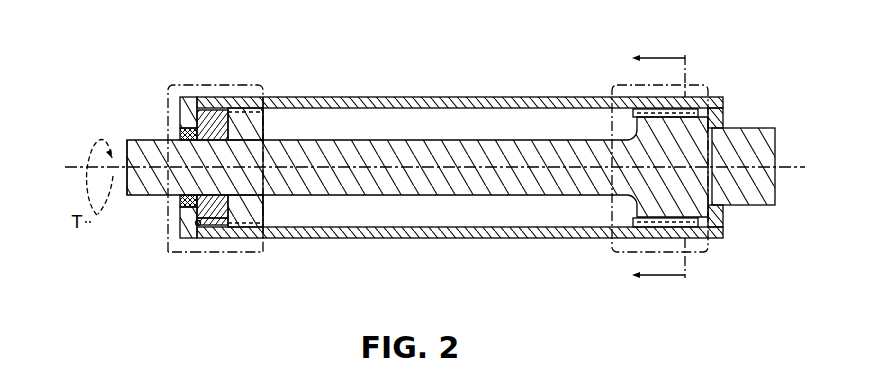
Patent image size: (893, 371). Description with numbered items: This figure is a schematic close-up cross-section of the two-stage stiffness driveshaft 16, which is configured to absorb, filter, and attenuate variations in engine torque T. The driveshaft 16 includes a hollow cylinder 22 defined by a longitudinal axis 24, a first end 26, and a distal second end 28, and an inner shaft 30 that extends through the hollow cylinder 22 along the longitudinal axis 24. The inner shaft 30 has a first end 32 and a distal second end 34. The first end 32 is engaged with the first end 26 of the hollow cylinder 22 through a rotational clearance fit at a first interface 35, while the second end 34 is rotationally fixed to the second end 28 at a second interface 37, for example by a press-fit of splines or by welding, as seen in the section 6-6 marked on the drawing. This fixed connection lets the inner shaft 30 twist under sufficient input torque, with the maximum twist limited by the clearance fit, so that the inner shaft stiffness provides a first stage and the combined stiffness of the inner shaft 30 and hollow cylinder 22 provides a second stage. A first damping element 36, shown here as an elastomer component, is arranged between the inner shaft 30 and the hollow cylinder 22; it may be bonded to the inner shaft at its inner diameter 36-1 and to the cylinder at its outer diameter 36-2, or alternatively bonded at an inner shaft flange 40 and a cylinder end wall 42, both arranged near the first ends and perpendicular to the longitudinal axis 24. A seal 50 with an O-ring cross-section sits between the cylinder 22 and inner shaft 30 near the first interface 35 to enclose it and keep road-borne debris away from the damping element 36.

The section 6- 6 is at (658, 167).
The driveshaft 16 is at (160, 105).
The hollow cylinder 22 is at (486, 97).
The longitudinal axis 24 is at (82, 166).
The first end 26 is at (178, 200).
The second end 28 is at (717, 240).
The inner shaft 30 is at (472, 196).
The first end 32 is at (123, 142).
The second end 34 is at (760, 128).
The first interface 35 is at (265, 246).
The first damping element 36 is at (220, 203).
The inner diameter 36-1 is at (205, 195).
The outer diameter 36-2 is at (207, 226).
The second interface 37 is at (616, 232).
The inner shaft flange 40 is at (237, 123).
The cylinder end wall 42 is at (196, 225).
The seal 50 is at (183, 134).